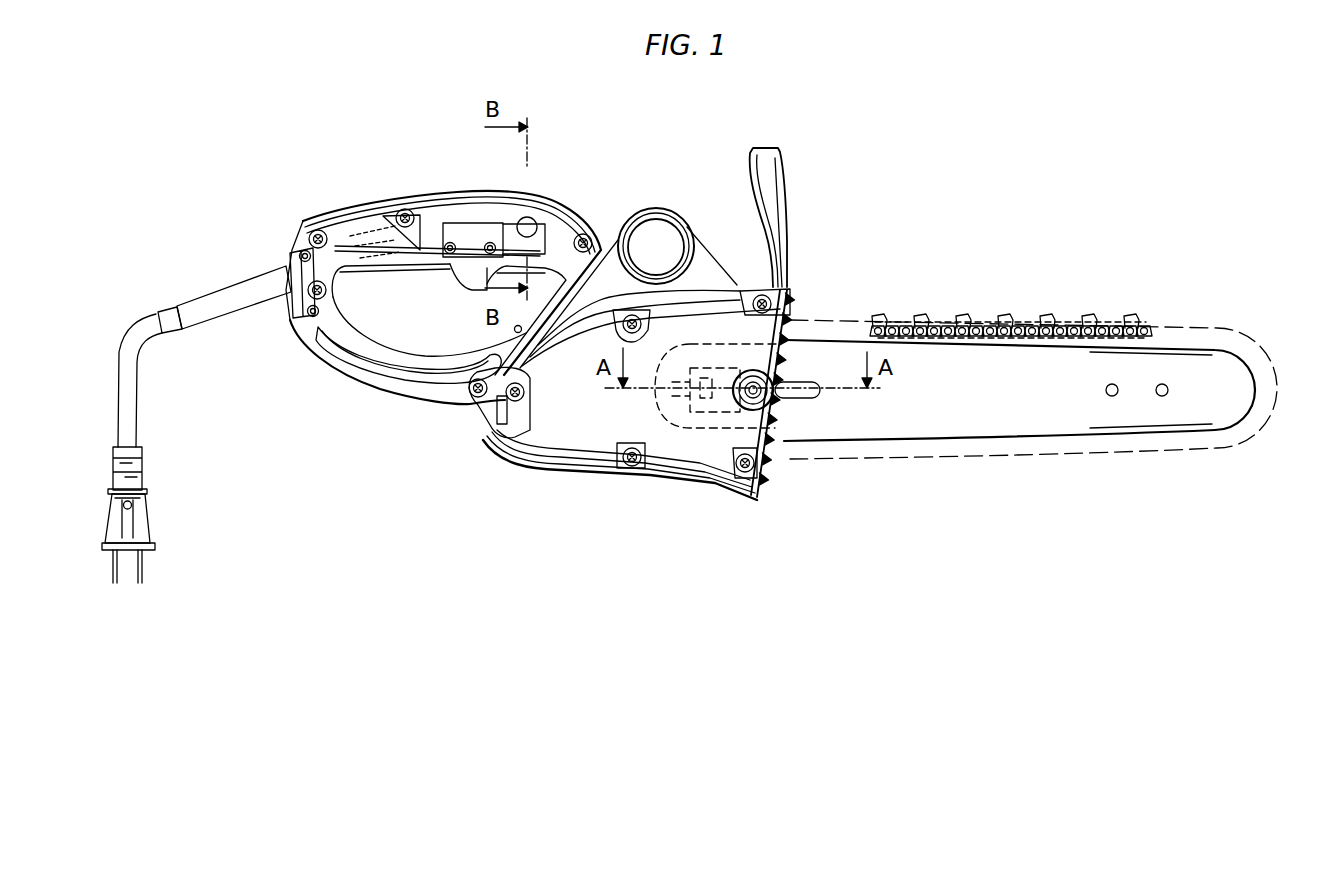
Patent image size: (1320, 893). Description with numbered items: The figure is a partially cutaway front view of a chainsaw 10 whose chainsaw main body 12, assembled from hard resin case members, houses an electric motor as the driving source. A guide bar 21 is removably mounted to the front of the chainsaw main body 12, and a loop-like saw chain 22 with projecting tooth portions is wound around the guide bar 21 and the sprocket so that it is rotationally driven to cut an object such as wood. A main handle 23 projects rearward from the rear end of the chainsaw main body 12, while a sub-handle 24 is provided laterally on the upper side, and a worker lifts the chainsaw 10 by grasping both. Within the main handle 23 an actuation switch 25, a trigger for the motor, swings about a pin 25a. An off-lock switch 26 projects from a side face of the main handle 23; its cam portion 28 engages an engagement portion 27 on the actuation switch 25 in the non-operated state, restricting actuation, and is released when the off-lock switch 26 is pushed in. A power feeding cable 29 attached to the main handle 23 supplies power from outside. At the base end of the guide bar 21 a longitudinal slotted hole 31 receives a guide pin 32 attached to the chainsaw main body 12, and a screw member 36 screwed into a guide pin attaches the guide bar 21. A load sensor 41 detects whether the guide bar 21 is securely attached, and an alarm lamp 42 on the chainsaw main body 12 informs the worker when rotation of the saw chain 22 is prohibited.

The chainsaw 10 is at (806, 165).
The chainsaw main body 12 is at (513, 460).
The guide bar 21 is at (975, 410).
The saw chain 22 is at (1010, 312).
The main handle 23 is at (402, 360).
The sub-handle 24 is at (657, 208).
The actuation switch 25 is at (460, 274).
The pin 25a is at (562, 200).
The off-lock switch 26 is at (545, 193).
The engagement portion 27 is at (477, 205).
The cam portion 28 is at (515, 200).
The power feeding cable 29 is at (225, 303).
The slotted hole 31 is at (805, 398).
The guide pin 32 is at (697, 373).
The screw member 36 is at (757, 363).
The load sensor 41 is at (727, 420).
The alarm lamp 42 is at (513, 330).